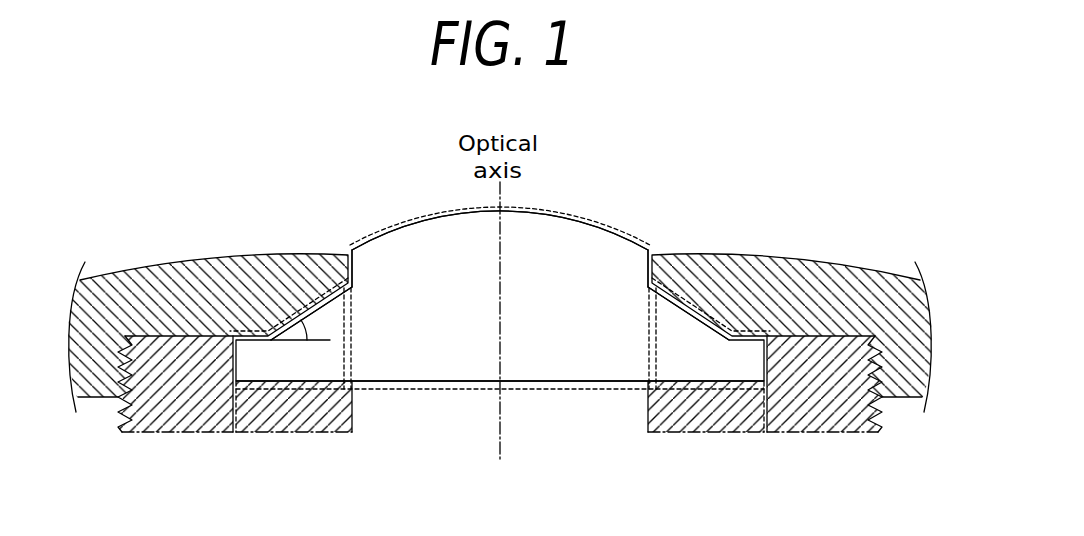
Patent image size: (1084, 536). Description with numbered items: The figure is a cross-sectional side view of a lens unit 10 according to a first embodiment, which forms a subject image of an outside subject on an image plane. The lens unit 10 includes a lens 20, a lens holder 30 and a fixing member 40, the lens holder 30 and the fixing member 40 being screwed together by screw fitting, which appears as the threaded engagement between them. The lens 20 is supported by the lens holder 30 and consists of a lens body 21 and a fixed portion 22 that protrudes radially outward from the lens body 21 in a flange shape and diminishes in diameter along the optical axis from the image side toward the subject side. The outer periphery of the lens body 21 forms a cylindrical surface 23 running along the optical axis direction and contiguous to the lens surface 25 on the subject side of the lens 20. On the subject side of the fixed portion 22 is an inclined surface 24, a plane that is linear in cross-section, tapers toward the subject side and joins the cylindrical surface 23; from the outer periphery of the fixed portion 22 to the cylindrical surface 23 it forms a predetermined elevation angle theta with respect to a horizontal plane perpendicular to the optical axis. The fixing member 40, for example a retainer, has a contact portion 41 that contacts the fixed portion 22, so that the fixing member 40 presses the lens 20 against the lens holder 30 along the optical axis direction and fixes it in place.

The lens unit 10 is at (602, 156).
The lens 20 is at (640, 231).
The lens body 21 is at (403, 389).
The fixed portion 22 is at (286, 390).
The cylindrical surface 23 is at (346, 264).
The inclined surface 24 is at (310, 305).
The lens surface 25 is at (416, 222).
The lens holder 30 is at (183, 414).
The fixing member 40 is at (177, 277).
The contact portion 41 is at (287, 307).